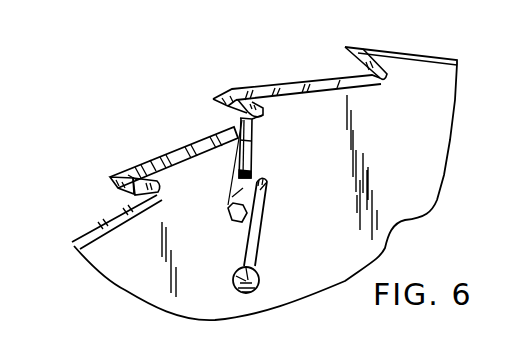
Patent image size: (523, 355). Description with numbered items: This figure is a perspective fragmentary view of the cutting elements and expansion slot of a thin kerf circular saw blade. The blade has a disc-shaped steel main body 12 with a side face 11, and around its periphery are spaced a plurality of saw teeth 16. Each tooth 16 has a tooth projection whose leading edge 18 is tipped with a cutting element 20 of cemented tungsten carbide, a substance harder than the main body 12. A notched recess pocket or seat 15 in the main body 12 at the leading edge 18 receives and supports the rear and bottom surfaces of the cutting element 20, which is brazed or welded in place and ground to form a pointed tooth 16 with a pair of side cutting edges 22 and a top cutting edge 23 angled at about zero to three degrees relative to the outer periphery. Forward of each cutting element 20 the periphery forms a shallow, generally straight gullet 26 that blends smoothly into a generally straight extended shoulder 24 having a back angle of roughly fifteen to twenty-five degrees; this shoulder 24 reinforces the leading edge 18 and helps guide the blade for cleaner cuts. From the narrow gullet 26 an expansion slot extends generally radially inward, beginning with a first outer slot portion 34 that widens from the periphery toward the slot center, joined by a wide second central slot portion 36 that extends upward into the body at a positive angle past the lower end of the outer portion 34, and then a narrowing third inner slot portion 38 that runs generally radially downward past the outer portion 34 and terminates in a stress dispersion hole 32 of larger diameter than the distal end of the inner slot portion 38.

The side face 11 is at (290, 187).
The main body 12 is at (335, 103).
The cutting element 20 is at (223, 96).
The leading edge 18 is at (261, 105).
The seat 15 is at (259, 117).
The first outer slot portion 34 is at (236, 168).
The gullet 26 is at (213, 138).
The extended shoulder 24 is at (153, 161).
The saw tooth 16 is at (110, 172).
The side cutting edge 22 is at (158, 188).
The top cutting edge 23 is at (116, 189).
The second central slot portion 36 is at (231, 201).
The third inner slot portion 38 is at (247, 240).
The stress dispersion hole 32 is at (258, 275).